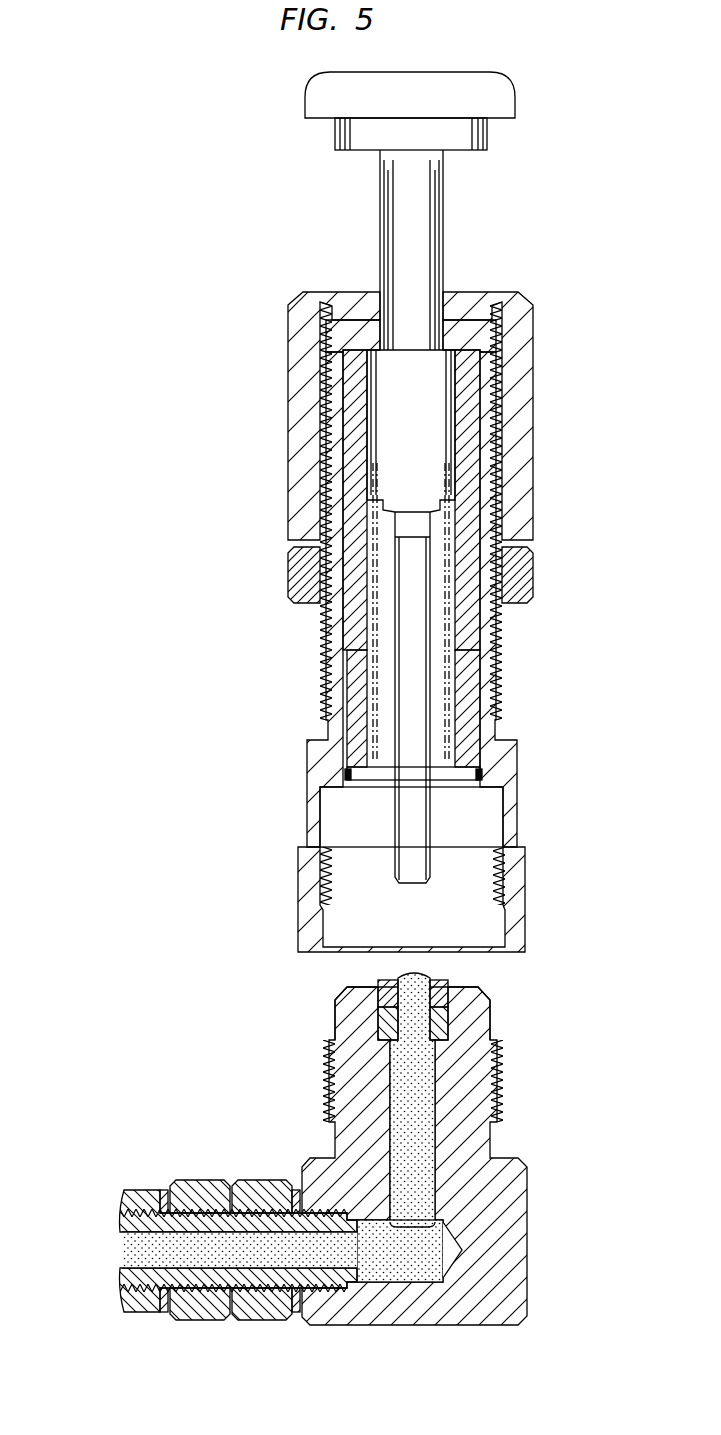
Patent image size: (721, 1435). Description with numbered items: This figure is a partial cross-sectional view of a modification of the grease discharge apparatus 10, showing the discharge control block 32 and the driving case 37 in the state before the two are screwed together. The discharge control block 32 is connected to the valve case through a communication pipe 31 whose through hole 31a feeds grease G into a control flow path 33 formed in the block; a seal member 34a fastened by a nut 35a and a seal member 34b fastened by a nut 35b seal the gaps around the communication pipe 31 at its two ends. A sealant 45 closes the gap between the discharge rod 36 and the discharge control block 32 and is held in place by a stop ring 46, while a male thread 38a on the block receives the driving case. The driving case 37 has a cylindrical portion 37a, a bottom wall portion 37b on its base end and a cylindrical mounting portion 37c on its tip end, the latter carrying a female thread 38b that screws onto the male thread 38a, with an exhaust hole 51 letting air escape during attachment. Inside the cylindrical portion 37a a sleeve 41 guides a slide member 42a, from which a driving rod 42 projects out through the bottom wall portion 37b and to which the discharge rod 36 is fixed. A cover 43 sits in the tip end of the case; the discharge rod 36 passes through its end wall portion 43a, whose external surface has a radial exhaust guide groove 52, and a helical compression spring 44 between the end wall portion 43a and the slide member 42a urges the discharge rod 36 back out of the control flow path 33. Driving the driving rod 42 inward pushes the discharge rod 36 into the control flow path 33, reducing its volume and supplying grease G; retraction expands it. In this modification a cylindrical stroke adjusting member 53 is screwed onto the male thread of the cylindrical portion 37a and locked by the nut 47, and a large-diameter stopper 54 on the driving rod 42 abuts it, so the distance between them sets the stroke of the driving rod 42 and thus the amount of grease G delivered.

The grease discharge apparatus 10 is at (528, 802).
The communication pipe 31 is at (145, 1277).
The through hole 31a is at (150, 1248).
The discharge control block 32 is at (498, 1198).
The control flow path 33 is at (420, 1138).
The seal member 34a is at (163, 1192).
The seal member 34b is at (296, 1192).
The nut 35a is at (190, 1193).
The nut 35b is at (246, 1193).
The discharge rod 36 is at (412, 681).
The driving case 37 is at (497, 462).
The cylindrical portion 37a is at (497, 423).
The bottom wall portion 37b is at (470, 332).
The cylindrical mounting portion 37c is at (515, 921).
The male thread 38a is at (497, 1083).
The female thread 38b is at (497, 878).
The sleeve 41 is at (465, 503).
The driving rod 42 is at (415, 198).
The slide member 42a is at (415, 380).
The cover 43 is at (470, 728).
The end wall portion 43a is at (437, 774).
The helical compression spring 44 is at (455, 633).
The sealant 45 is at (384, 1021).
The stop ring 46 is at (386, 991).
The nut 47 is at (520, 576).
The exhaust hole 51 is at (510, 826).
The exhaust guide groove 52 is at (348, 778).
The stroke adjusting member 53 is at (520, 326).
The stopper 54 is at (485, 96).
The grease G is at (420, 1253).